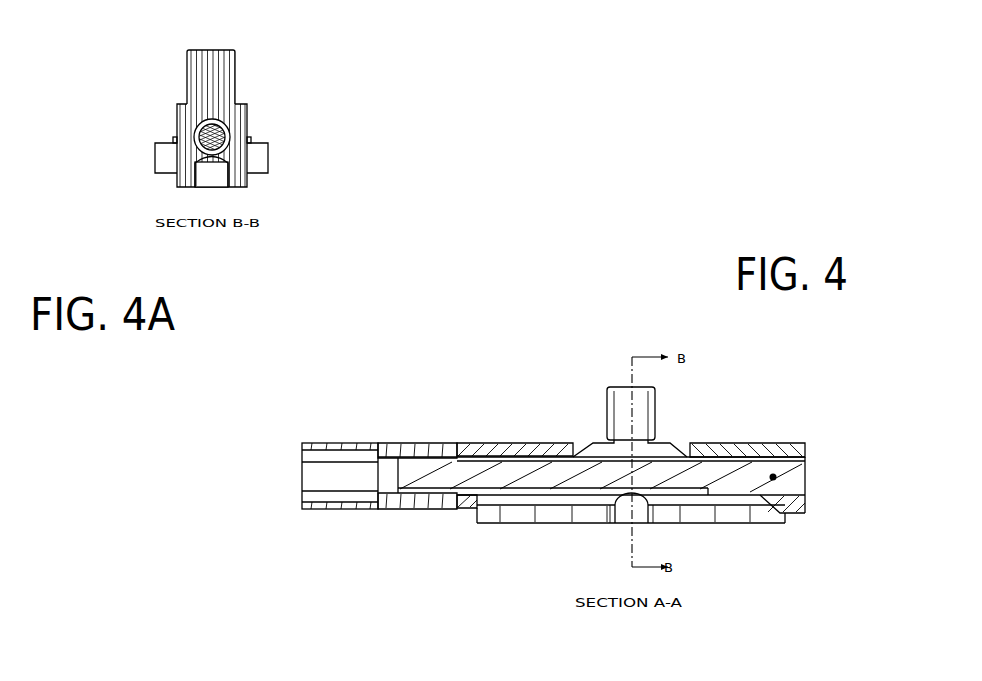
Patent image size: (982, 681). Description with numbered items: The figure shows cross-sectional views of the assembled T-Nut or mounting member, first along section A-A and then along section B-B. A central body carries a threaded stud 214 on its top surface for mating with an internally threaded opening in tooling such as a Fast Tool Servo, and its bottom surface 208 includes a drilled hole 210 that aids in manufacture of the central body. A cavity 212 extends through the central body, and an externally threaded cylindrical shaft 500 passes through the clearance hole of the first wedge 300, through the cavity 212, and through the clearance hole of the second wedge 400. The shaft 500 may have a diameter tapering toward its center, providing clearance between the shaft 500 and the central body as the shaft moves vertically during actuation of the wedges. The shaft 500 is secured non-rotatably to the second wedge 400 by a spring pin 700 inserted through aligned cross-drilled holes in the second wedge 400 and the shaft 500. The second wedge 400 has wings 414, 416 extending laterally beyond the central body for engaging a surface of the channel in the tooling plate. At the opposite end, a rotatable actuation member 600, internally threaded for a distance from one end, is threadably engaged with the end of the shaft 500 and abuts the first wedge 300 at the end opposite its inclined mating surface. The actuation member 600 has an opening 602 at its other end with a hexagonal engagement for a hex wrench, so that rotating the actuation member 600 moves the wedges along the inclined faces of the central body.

In FIG. 4, the central body bottom surface 208 is at (558, 515).
In FIG. 4, the drilled hole 210 is at (637, 512).
In FIG. 4A, the drilled hole 210 is at (217, 180).
In FIG. 4A, the cavity 212 is at (208, 163).
In FIG. 4, the threaded stud 214 is at (625, 420).
In FIG. 4A, the threaded stud 214 is at (230, 78).
In FIG. 4, the first wedge 300 is at (498, 448).
In FIG. 4, the second wedge 400 is at (742, 448).
In FIG. 4A, the wing 414 is at (162, 163).
In FIG. 4A, the wing 416 is at (265, 163).
In FIG. 4, the externally threaded cylindrical shaft 500 is at (440, 478).
In FIG. 4A, the externally threaded cylindrical shaft 500 is at (219, 136).
In FIG. 4, the actuation member 600 is at (397, 450).
In FIG. 4, the opening 602 is at (302, 480).
In FIG. 4, the spring pin 700 is at (776, 476).
In FIG. 4A, the spring pin 700 is at (175, 138).